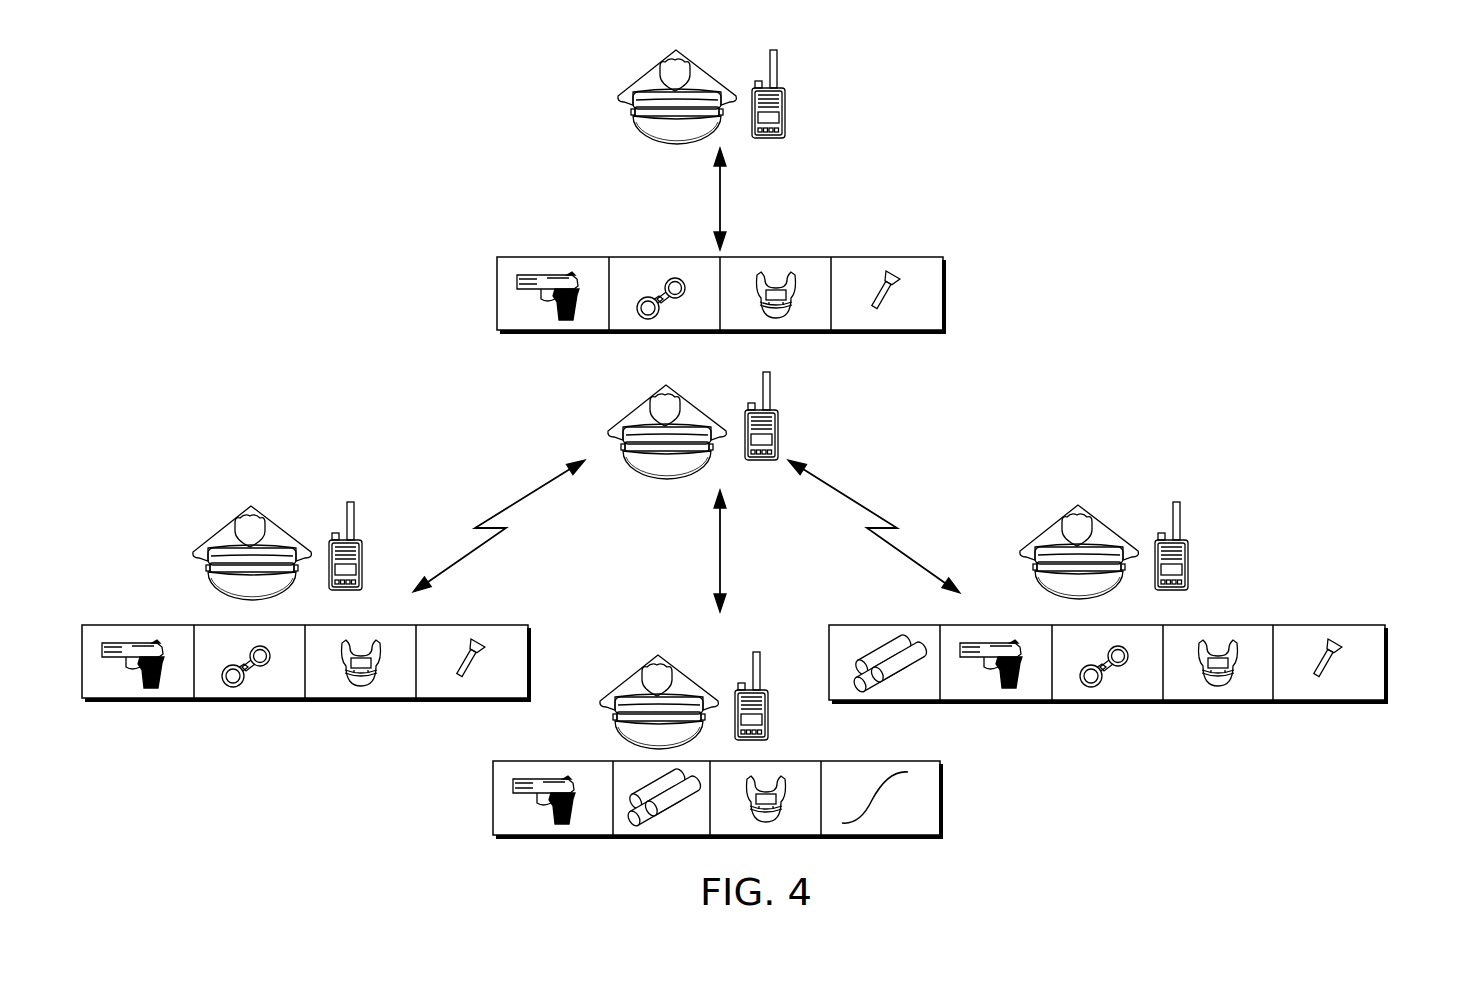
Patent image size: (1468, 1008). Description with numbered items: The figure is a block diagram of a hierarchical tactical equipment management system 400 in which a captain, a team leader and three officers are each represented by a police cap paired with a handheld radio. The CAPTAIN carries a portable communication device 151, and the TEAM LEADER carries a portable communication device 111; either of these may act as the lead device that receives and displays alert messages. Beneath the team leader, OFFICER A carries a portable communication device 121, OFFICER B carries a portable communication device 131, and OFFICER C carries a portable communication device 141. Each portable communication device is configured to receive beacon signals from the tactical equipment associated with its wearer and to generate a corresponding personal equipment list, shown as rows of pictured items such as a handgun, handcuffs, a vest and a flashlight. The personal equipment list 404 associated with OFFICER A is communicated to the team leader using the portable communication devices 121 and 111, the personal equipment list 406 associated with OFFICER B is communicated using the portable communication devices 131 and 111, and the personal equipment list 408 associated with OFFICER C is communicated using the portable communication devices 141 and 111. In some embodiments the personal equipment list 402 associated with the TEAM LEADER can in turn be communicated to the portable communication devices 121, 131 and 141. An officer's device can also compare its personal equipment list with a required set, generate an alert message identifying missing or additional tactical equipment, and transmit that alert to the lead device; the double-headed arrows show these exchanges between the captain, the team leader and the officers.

The hierarchical tactical equipment management system 400 is at (262, 204).
The portable communication device 151 is at (786, 118).
The portable communication device 111 is at (778, 432).
The portable communication device 121 is at (362, 564).
The portable communication device 131 is at (768, 714).
The portable communication device 141 is at (1188, 564).
The personal equipment list 402 is at (945, 297).
The personal equipment list 404 is at (530, 665).
The personal equipment list 406 is at (942, 800).
The personal equipment list 408 is at (1387, 665).